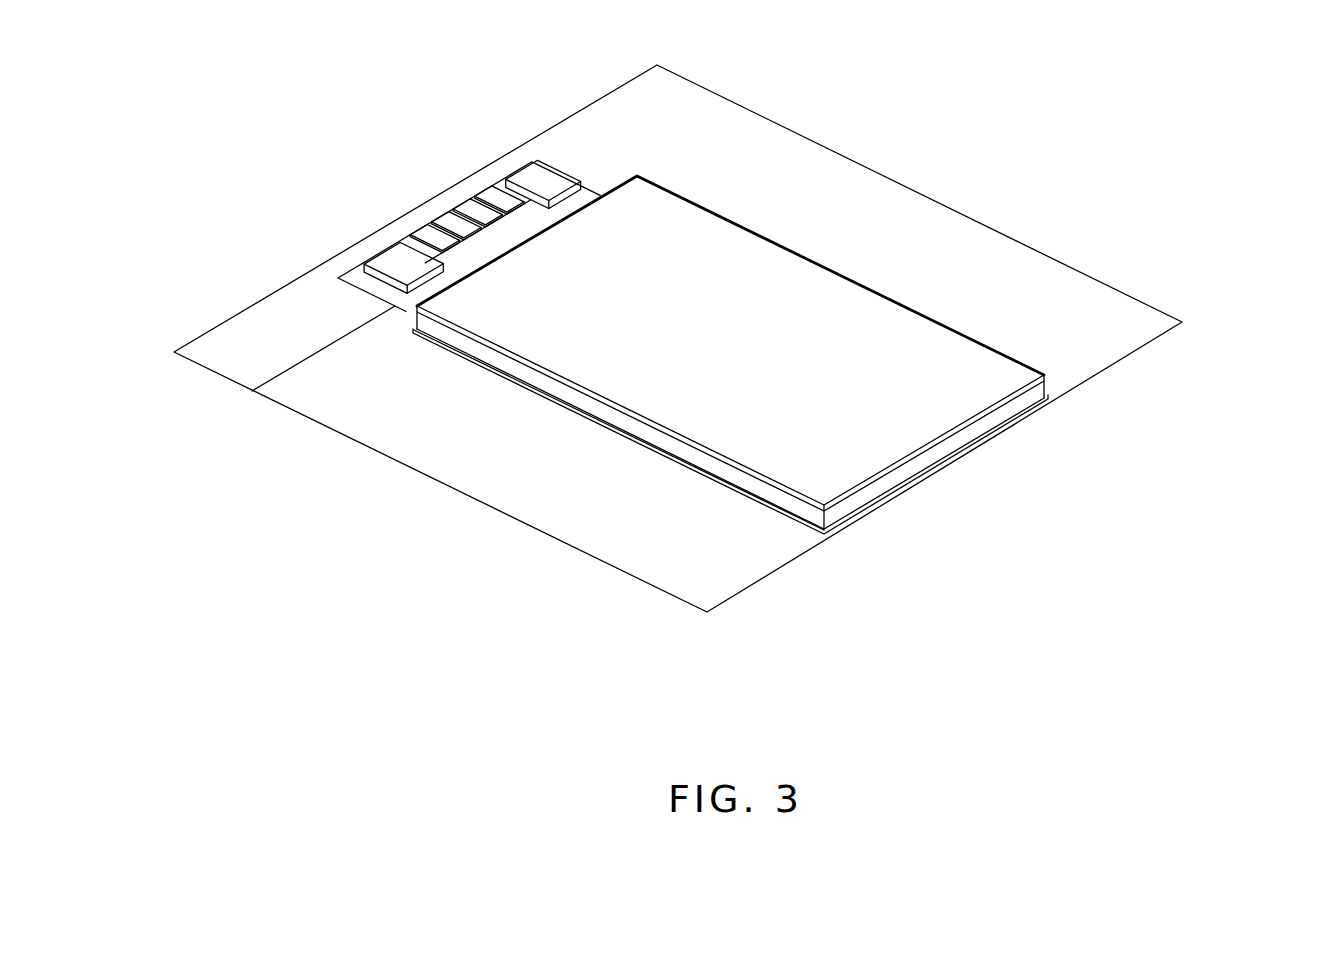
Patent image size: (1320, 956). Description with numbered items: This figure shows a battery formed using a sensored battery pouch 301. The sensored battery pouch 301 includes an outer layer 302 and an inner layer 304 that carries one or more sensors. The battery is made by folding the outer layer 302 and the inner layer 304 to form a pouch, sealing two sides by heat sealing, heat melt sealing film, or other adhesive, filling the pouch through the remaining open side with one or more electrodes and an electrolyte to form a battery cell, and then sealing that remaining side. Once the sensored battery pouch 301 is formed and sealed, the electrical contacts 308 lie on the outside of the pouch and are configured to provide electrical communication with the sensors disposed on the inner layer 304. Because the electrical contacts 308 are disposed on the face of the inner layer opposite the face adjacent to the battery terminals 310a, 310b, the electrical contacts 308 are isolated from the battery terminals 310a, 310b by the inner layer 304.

The sensored battery pouch 301 is at (1062, 196).
The outer layer 302 is at (1152, 318).
The inner layer 304 is at (248, 303).
The electrical contacts 308 is at (473, 210).
The battery terminal 310a is at (410, 265).
The battery terminal 310b is at (548, 167).